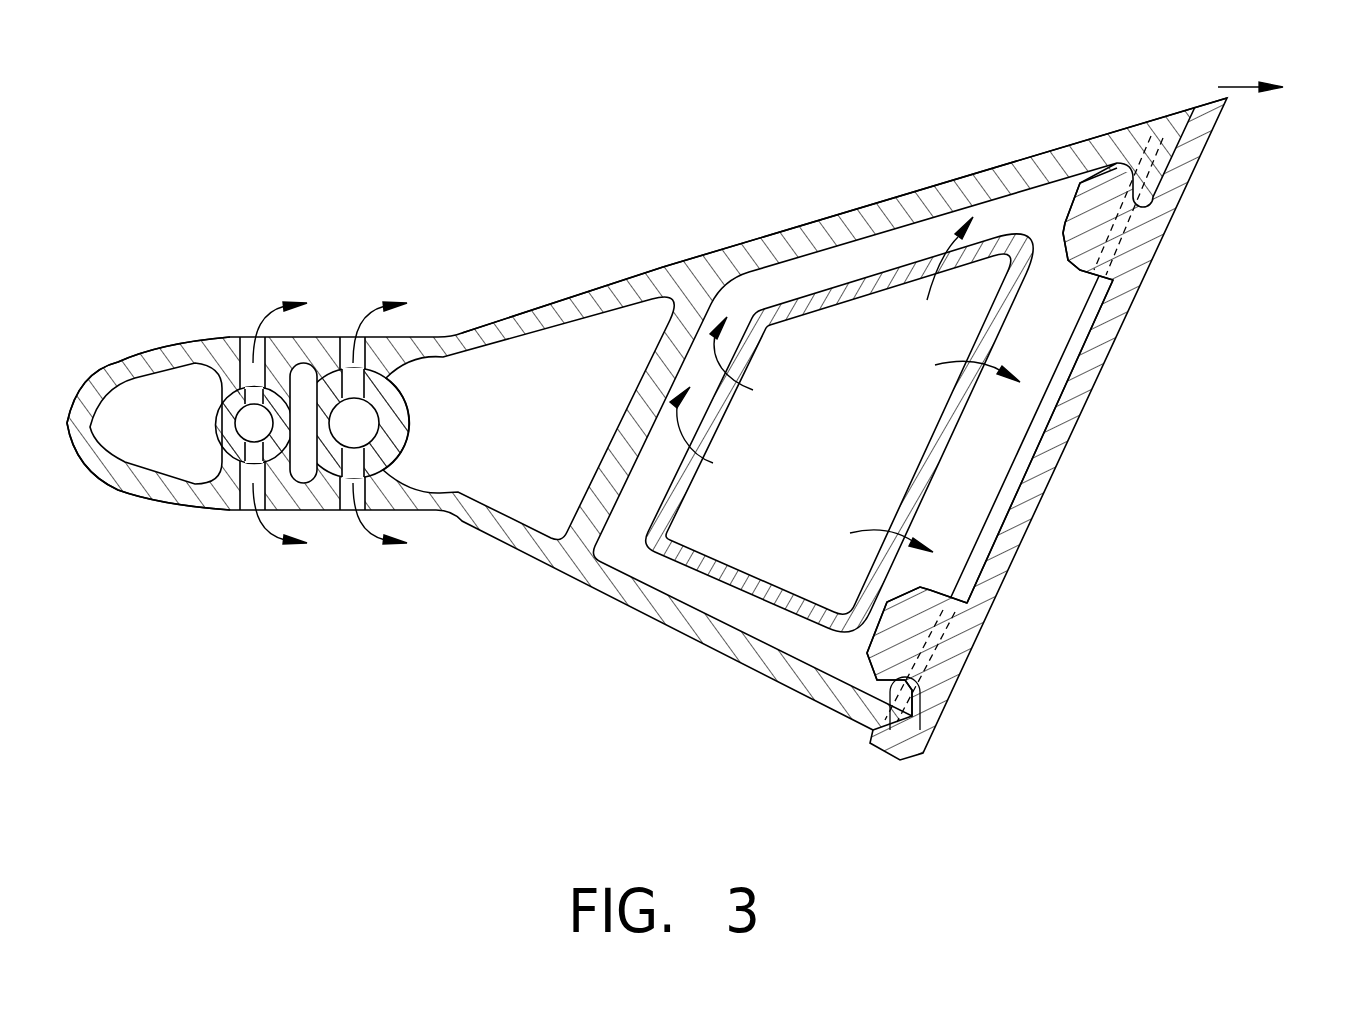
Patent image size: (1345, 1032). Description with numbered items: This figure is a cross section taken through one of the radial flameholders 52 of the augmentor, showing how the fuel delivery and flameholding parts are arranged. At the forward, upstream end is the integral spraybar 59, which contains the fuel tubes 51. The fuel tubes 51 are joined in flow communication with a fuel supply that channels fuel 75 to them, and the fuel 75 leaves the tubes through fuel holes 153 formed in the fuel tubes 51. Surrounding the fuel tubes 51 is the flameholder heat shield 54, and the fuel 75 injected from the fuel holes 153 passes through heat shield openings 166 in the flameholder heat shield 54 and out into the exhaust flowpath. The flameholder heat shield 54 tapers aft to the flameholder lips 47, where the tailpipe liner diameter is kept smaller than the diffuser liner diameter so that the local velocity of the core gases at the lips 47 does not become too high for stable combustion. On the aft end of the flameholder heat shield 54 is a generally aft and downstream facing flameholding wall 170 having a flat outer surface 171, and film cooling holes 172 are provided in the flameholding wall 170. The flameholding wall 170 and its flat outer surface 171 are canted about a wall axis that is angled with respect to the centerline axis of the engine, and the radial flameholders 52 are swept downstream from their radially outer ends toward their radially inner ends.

The flameholder lips 47 is at (1218, 87).
The fuel tubes 51 is at (311, 399).
The radial flameholder 52 is at (540, 247).
The flameholder heat shield 54 is at (670, 262).
The integral spraybar 59 is at (200, 510).
The fuel 75 is at (206, 399).
The fuel holes 153 is at (197, 426).
The heat shield openings 166 is at (250, 483).
The flameholding wall 170 is at (1170, 227).
The flat outer surface 171 is at (1013, 562).
The film cooling holes 172 is at (1107, 337).